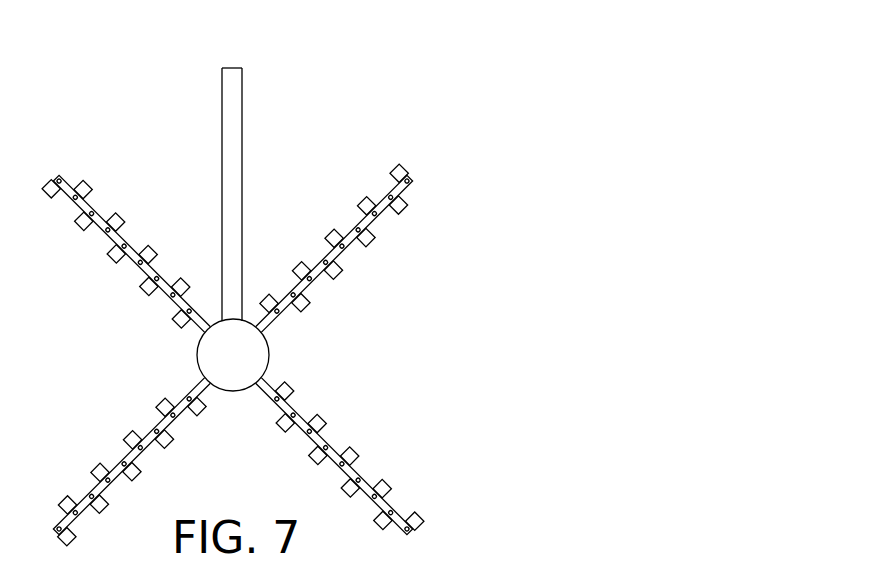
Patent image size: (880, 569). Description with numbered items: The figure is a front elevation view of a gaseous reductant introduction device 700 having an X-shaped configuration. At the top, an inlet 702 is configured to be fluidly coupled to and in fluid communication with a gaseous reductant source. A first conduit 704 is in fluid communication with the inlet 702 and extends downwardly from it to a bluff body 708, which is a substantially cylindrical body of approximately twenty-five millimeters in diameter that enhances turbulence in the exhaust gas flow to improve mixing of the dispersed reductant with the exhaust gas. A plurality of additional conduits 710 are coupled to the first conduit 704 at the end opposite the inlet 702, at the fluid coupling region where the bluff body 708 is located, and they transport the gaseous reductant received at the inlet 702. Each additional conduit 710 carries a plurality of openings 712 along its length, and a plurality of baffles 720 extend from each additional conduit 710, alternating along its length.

The gaseous reductant introduction device 700 is at (504, 110).
The inlet 702 is at (232, 50).
The first conduit 704 is at (243, 238).
The bluff body 708 is at (269, 350).
The additional conduits 710 is at (68, 180).
The openings 712 is at (137, 248).
The baffles 720 is at (122, 438).